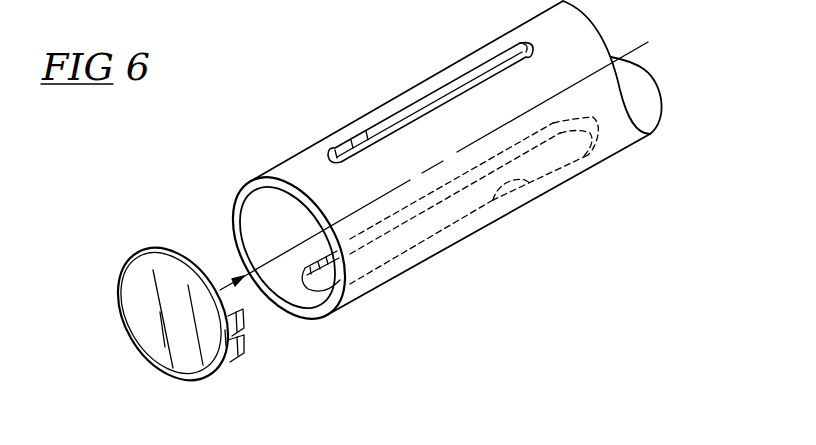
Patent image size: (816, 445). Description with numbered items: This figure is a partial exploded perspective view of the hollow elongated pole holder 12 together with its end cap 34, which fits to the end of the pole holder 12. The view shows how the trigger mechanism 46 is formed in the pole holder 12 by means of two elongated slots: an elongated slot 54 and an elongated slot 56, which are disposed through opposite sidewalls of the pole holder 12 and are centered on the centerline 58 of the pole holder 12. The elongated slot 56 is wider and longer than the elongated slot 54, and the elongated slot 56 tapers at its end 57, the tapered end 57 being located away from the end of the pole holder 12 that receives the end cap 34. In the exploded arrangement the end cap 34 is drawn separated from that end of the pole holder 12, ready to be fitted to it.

The pole holder 12 is at (622, 128).
The end cap 34 is at (152, 304).
The trigger mechanism 46 is at (425, 261).
The elongated slot 54 is at (434, 107).
The elongated slot 56 is at (493, 200).
The end 57 is at (600, 128).
The centerline 58 is at (288, 250).